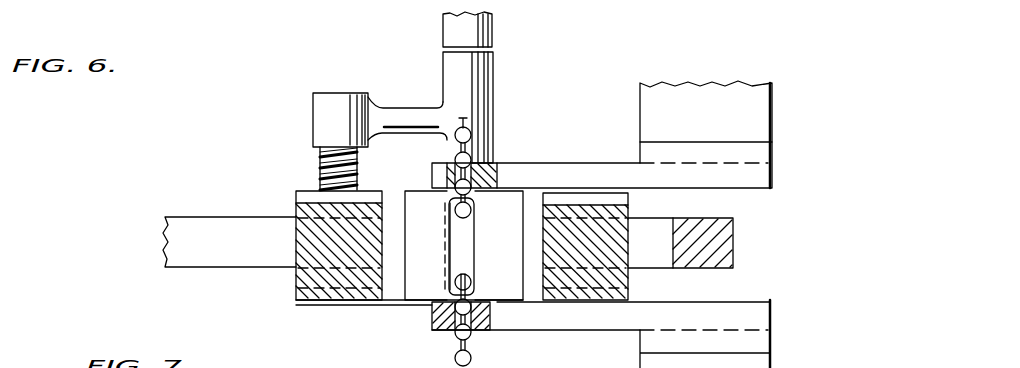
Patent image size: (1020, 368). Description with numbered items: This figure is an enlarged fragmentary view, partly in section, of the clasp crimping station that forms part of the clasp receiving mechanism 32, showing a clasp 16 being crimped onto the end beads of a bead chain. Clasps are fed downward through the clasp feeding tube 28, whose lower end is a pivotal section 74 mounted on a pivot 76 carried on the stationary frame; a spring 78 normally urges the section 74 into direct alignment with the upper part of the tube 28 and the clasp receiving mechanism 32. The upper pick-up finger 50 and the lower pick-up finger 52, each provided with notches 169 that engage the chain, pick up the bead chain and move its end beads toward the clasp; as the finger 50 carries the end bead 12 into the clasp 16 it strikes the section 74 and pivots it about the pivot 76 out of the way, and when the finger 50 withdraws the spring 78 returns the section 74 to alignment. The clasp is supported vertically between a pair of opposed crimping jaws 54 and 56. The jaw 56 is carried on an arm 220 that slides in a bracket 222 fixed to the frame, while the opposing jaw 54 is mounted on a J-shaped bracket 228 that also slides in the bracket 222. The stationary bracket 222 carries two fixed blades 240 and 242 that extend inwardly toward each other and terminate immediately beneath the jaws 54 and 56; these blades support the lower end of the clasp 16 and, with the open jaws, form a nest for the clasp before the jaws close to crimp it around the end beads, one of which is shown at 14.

The end bead 12 is at (470, 217).
The ball 14 is at (465, 278).
The clasp 16 is at (445, 240).
The clasp feeding tube 28 is at (493, 31).
The clasp receiving mechanism 32 is at (398, 307).
The upper pick-up finger 50 is at (555, 162).
The lower pick-up finger 52 is at (557, 332).
The crimping jaw 54 is at (500, 188).
The crimping jaw 56 is at (410, 188).
The pivotal section 74 is at (493, 81).
The pivot 76 is at (318, 158).
The spring 78 is at (318, 173).
The notches 169 is at (472, 157).
The arm 220 is at (252, 268).
The bracket 222 is at (292, 282).
The J-shaped bracket 228 is at (655, 268).
The fixed blade 240 is at (415, 305).
The fixed blade 242 is at (518, 302).